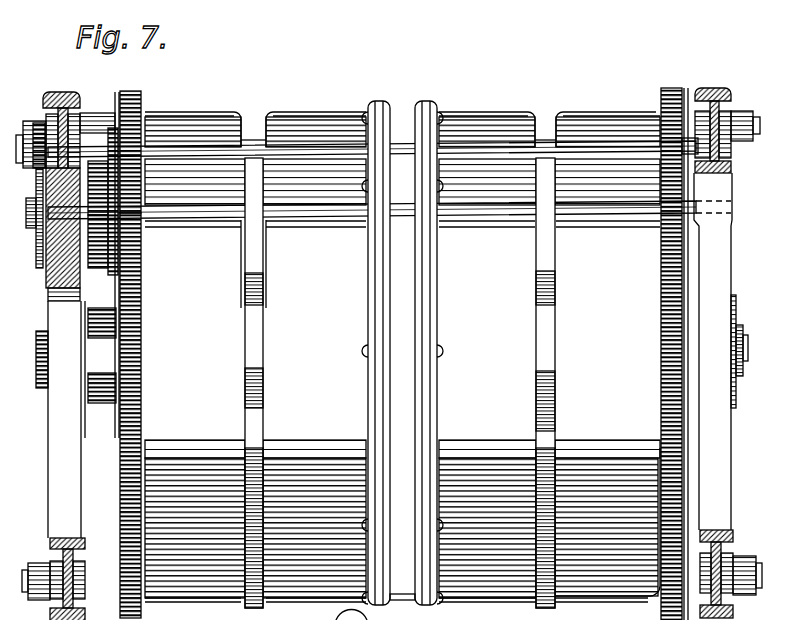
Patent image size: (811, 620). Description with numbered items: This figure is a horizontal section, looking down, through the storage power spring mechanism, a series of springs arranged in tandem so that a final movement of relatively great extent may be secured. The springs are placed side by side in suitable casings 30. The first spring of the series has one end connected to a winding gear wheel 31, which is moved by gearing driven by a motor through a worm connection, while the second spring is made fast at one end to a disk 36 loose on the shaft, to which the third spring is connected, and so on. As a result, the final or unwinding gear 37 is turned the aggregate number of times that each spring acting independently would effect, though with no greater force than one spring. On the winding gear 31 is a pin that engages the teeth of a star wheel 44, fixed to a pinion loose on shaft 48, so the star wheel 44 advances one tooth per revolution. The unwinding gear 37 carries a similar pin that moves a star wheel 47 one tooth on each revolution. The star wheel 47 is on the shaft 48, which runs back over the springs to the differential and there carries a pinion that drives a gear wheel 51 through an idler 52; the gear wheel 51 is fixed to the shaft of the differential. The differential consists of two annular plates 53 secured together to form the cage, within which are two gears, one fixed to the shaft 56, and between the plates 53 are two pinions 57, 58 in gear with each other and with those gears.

The casings 30 is at (402, 357).
The gear wheel 31 is at (133, 293).
The disk 36 is at (393, 298).
The unwinding gear 37 is at (655, 278).
The star wheel 44 is at (132, 106).
The star wheel 47 is at (678, 84).
The shaft 48 is at (307, 142).
The gear wheel 51 is at (32, 250).
The idler 52 is at (30, 112).
The annular plates 53 is at (98, 252).
The shaft 56 is at (325, 207).
The pinion 57 is at (95, 185).
The pinion 58 is at (100, 228).